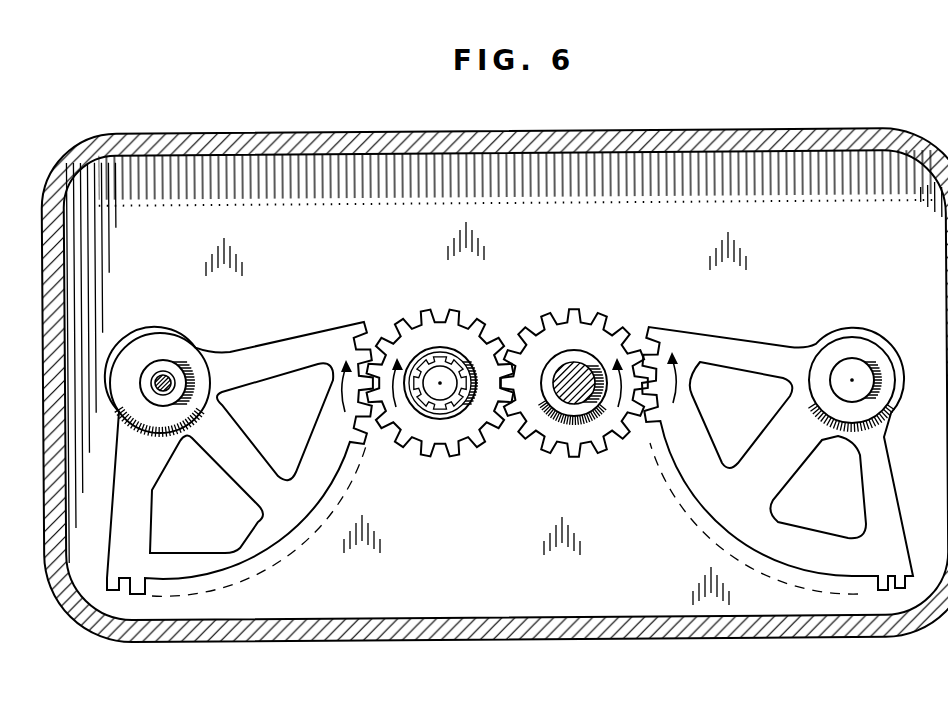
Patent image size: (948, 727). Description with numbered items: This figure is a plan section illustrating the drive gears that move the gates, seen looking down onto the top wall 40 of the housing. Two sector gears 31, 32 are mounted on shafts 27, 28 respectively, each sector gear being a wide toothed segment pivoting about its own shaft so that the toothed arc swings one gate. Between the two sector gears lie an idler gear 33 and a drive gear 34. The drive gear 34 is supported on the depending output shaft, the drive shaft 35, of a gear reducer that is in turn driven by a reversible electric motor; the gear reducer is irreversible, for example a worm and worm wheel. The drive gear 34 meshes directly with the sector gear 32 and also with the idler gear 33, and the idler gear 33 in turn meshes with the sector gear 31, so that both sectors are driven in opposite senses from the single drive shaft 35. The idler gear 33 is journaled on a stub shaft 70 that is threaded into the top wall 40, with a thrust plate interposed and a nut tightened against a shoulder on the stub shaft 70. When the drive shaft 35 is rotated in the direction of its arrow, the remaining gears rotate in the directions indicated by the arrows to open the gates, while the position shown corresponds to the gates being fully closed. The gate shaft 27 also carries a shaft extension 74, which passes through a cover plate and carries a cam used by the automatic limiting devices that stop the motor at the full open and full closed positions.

The top wall 40 is at (400, 604).
The sector gear 31 is at (133, 482).
The sector gear 32 is at (872, 468).
The shaft 27 is at (147, 392).
The shaft extension 74 is at (158, 378).
The shaft 28 is at (846, 370).
The idler gear 33 is at (413, 340).
The drive gear 34 is at (560, 336).
The stub shaft 70 is at (441, 382).
The drive shaft 35 is at (571, 395).